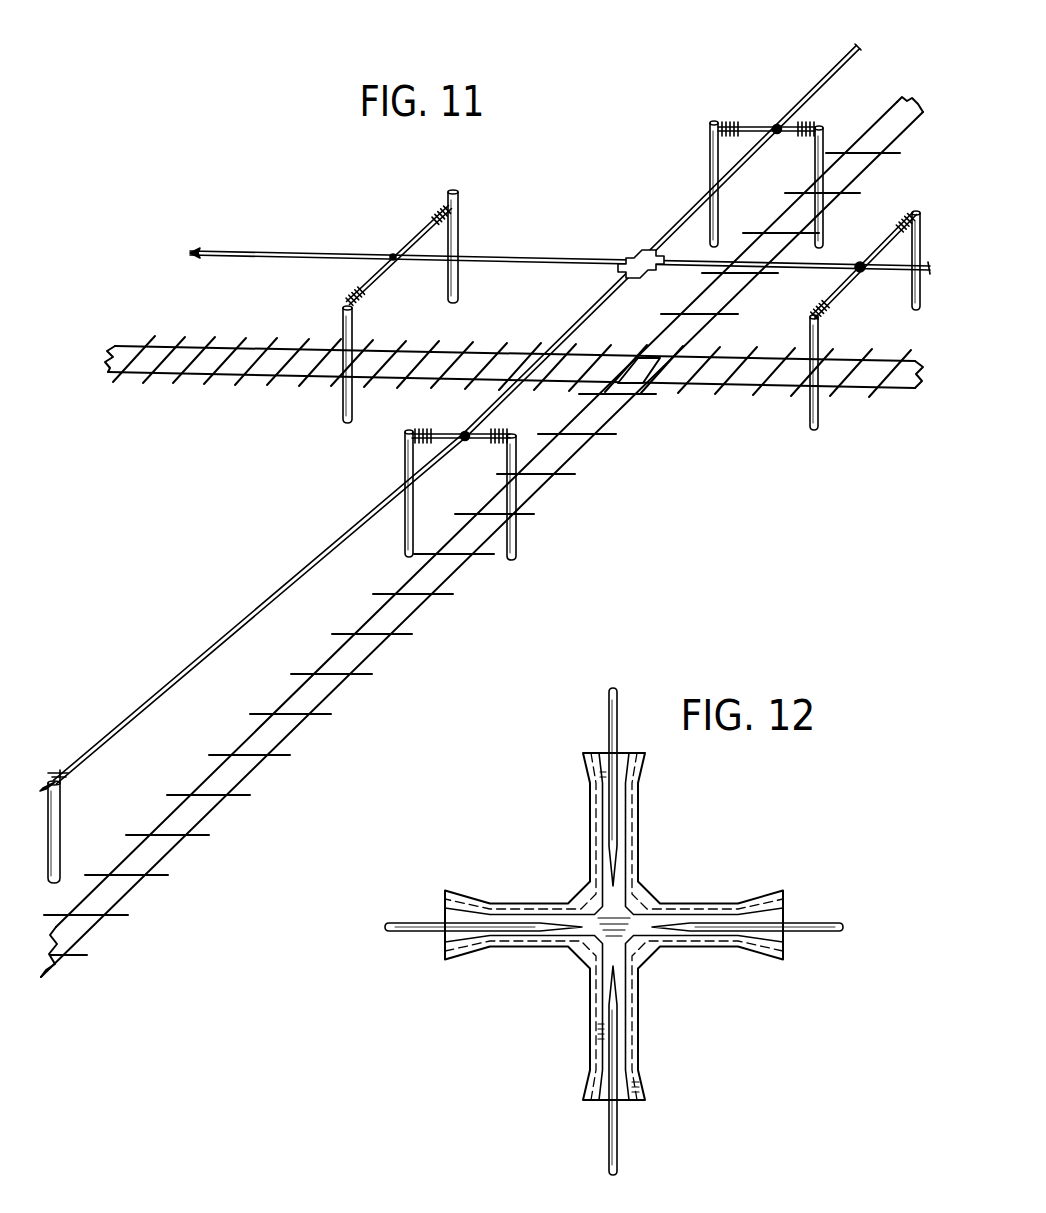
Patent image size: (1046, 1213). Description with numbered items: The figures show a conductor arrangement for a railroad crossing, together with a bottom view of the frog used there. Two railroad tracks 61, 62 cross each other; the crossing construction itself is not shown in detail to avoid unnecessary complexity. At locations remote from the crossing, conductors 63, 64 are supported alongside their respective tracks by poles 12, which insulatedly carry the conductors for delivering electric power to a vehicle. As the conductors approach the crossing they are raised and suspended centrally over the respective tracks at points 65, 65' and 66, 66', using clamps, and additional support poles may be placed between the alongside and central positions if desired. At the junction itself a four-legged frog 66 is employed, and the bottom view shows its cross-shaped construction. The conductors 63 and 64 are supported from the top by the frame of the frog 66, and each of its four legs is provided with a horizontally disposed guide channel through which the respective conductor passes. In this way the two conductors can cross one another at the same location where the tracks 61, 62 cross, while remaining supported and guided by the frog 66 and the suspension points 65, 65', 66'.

In FIG. 11, the track 61 is at (352, 688).
In FIG. 11, the track 62 is at (737, 392).
In FIG. 11, the conductor 63 is at (268, 602).
In FIG. 12, the conductor 63 is at (607, 713).
In FIG. 11, the conductor 64 is at (529, 256).
In FIG. 12, the conductor 64 is at (412, 922).
In FIG. 11, the suspension point 65 is at (460, 494).
In FIG. 11, the suspension point 65' is at (766, 166).
In FIG. 11, the four-legged frog 66 is at (502, 306).
In FIG. 12, the four-legged frog 66 is at (614, 926).
In FIG. 11, the suspension point 66' is at (865, 320).
In FIG. 11, the pole 12 is at (64, 832).